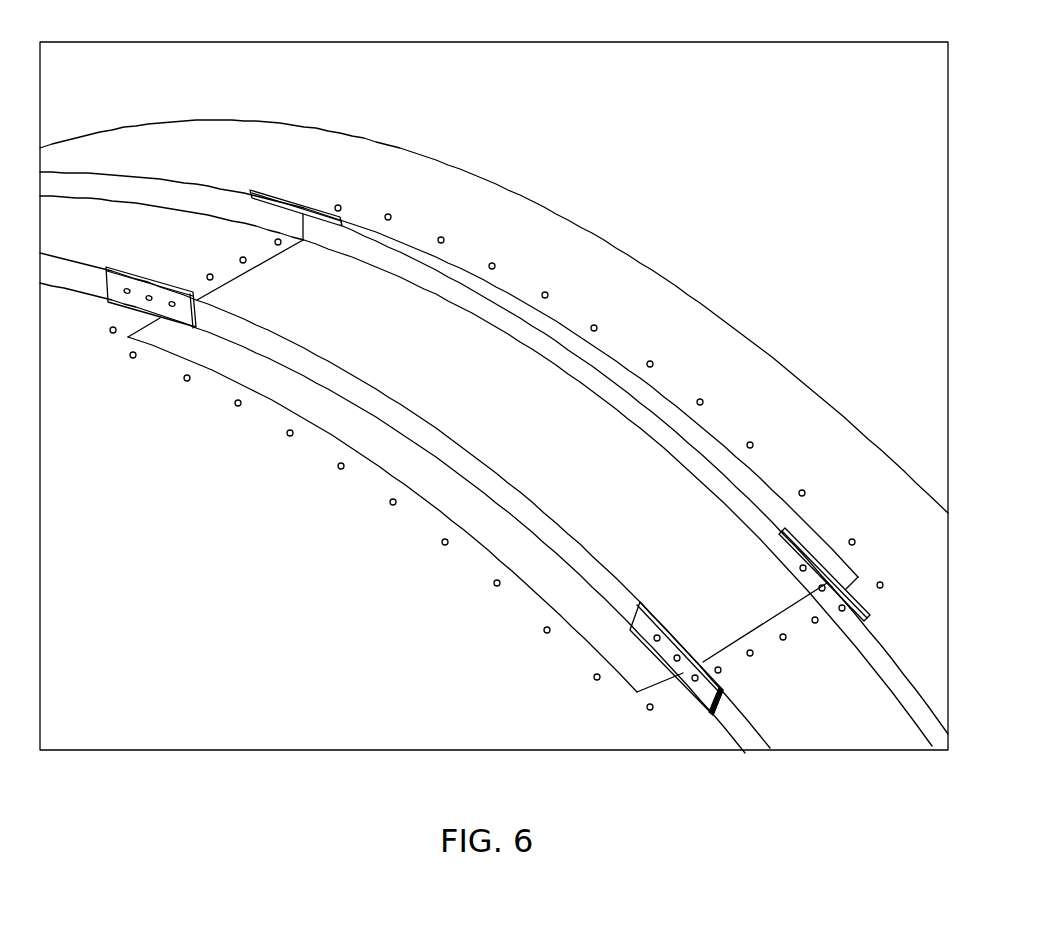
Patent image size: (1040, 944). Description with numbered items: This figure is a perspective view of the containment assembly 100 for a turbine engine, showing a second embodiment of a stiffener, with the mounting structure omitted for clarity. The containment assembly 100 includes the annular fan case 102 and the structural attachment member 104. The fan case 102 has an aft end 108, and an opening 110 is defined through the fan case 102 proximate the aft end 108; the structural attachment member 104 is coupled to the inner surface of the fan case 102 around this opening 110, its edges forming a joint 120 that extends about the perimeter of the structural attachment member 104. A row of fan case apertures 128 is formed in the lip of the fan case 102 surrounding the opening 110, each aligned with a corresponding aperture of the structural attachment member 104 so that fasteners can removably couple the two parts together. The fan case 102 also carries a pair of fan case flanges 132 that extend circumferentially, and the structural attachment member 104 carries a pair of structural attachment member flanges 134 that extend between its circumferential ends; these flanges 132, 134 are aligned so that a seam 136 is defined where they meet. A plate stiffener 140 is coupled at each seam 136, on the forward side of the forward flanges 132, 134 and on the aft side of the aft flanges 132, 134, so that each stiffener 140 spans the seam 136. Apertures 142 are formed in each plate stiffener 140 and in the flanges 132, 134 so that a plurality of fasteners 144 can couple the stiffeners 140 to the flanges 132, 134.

The containment assembly 100 is at (803, 172).
The fan case 102 is at (262, 596).
The structural attachment member 104 is at (410, 397).
The aft end 108 is at (705, 302).
The opening 110 is at (765, 642).
The joint 120 is at (530, 606).
The fan case apertures 128 is at (702, 400).
The fan case flanges 132 is at (915, 702).
The structural attachment member flanges 134 is at (543, 342).
The seam 136 is at (318, 222).
The stiffener 140 is at (260, 190).
The apertures 142 is at (842, 608).
The fasteners 144 is at (695, 678).